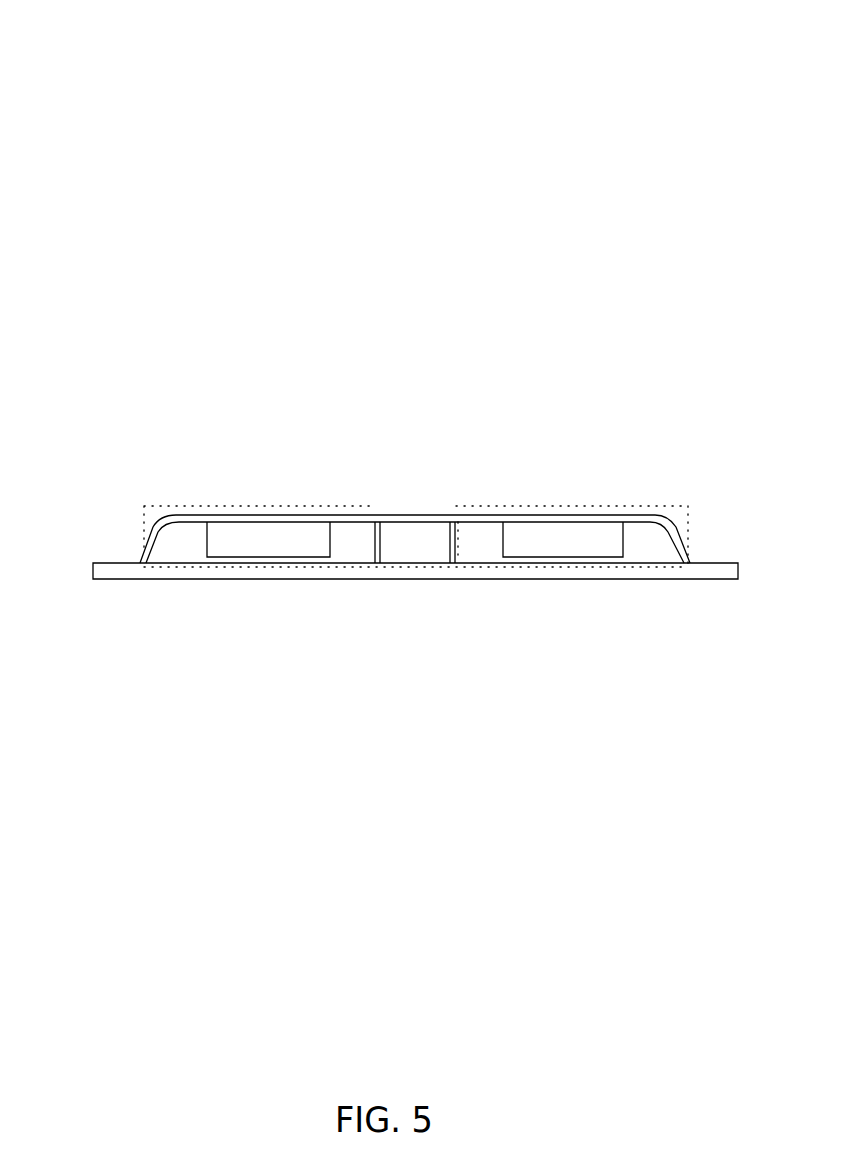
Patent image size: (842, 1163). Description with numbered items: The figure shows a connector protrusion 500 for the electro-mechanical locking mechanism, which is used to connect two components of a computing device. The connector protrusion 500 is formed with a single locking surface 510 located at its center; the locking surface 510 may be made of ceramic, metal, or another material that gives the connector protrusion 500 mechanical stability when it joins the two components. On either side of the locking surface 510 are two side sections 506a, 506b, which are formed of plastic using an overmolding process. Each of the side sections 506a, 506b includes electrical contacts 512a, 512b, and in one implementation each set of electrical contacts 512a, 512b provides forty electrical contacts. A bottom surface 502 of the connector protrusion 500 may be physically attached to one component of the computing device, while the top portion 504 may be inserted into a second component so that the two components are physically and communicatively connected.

The connector protrusion 500 is at (140, 86).
The bottom surface 502 is at (717, 579).
The top portion 504 is at (678, 532).
The side section 506a is at (561, 506).
The side section 506b is at (275, 506).
The locking surface 510 is at (406, 560).
The electrical contacts 512a is at (565, 551).
The electrical contacts 512b is at (281, 552).